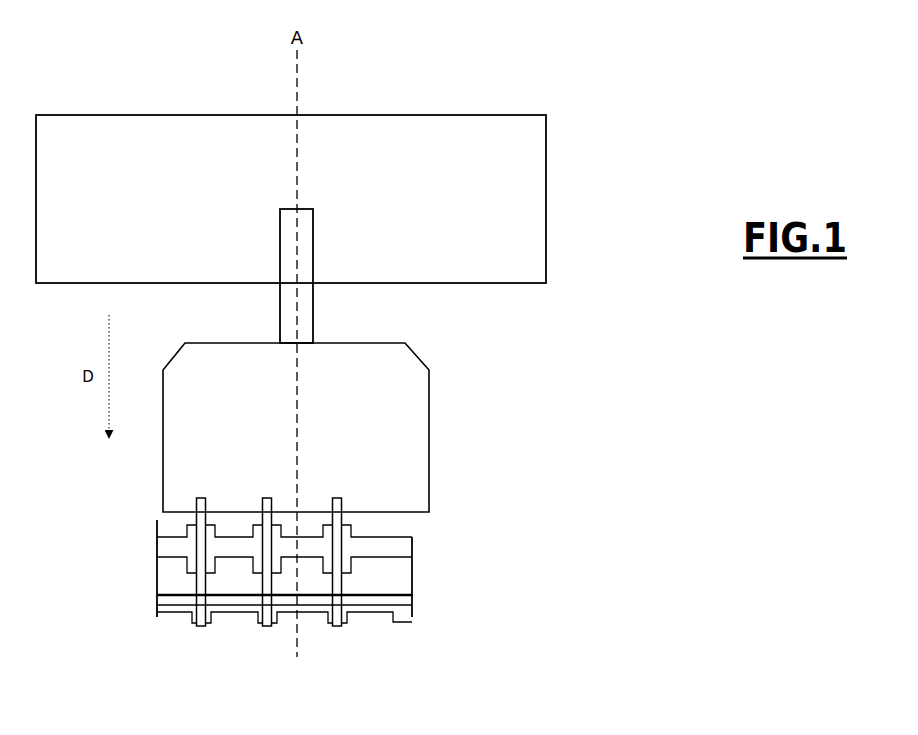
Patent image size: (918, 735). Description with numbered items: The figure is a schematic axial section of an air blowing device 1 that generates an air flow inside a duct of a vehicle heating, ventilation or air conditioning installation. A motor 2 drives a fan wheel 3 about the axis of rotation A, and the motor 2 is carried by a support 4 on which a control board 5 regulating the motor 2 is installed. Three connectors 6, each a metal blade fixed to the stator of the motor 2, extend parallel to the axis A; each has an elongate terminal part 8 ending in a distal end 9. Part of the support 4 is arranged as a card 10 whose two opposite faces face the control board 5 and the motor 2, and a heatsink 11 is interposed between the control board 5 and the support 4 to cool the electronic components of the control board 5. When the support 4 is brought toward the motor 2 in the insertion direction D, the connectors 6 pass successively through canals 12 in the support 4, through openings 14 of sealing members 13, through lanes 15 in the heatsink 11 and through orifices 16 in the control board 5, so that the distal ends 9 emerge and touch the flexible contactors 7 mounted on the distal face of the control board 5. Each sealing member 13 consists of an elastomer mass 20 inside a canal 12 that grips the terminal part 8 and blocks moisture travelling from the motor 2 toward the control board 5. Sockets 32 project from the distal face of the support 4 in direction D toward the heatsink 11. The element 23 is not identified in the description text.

The air blowing device 1 is at (515, 419).
The motor 2 is at (296, 427).
The fan wheel 3 is at (291, 199).
The support 4 is at (410, 548).
The control board 5 is at (400, 622).
The connectors 6 is at (201, 498).
The flexible contactors 7 is at (180, 622).
The terminal part 8 is at (184, 577).
The distal end 9 is at (210, 623).
The card 10 is at (416, 530).
The heatsink 11 is at (402, 576).
The canals 12 is at (345, 546).
The sealing member 13 is at (324, 549).
The opening 14 is at (299, 568).
The lanes 15 is at (344, 570).
The orifices 16 is at (345, 613).
The elastomer mass 20 is at (255, 538).
The upper plate 23 is at (190, 526).
The socket 32 is at (220, 568).